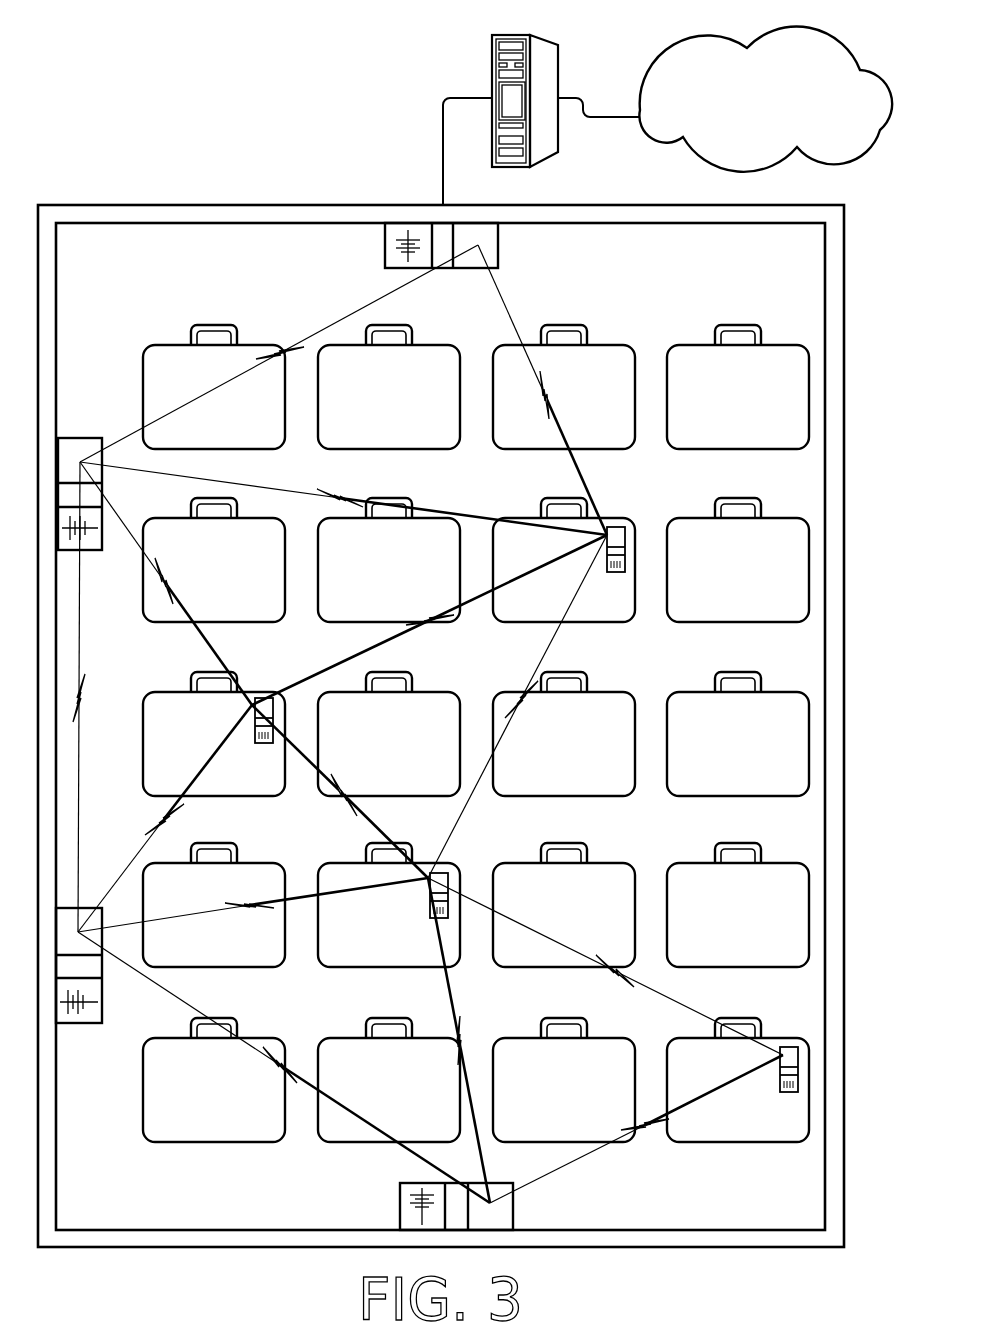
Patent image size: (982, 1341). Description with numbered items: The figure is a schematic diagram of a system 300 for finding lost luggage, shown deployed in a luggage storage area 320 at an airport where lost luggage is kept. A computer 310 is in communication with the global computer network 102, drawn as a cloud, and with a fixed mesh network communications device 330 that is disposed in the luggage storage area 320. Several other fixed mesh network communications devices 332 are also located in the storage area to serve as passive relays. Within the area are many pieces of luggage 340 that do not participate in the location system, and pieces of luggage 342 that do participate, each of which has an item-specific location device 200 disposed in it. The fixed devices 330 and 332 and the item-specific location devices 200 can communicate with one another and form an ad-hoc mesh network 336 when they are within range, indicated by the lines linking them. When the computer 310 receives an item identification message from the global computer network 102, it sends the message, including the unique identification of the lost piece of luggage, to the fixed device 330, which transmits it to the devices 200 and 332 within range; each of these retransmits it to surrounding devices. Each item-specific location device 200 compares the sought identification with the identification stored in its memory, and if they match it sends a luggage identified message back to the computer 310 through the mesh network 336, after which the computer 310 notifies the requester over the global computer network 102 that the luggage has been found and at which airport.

The system 300 is at (352, 66).
The computer 310 is at (543, 34).
The global computer network 102 is at (703, 36).
The luggage storage area 320 is at (279, 200).
The ad-hoc mesh network 336 is at (254, 305).
The fixed mesh network communications device 330 is at (498, 236).
The fixed mesh network communications device 332 is at (70, 438).
The piece of luggage 340 is at (243, 426).
The piece of luggage 342 is at (551, 609).
The item-specific location device 200 is at (606, 536).